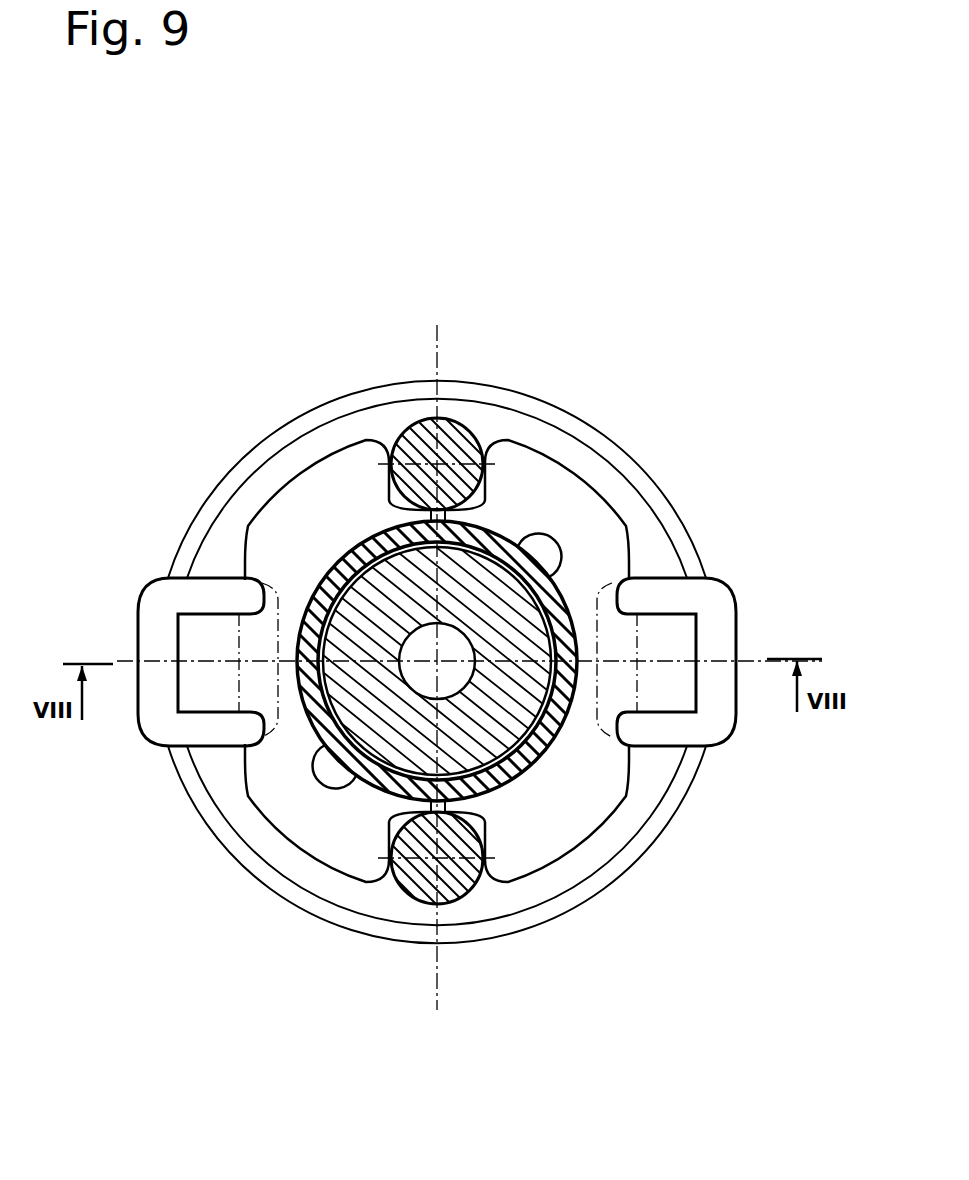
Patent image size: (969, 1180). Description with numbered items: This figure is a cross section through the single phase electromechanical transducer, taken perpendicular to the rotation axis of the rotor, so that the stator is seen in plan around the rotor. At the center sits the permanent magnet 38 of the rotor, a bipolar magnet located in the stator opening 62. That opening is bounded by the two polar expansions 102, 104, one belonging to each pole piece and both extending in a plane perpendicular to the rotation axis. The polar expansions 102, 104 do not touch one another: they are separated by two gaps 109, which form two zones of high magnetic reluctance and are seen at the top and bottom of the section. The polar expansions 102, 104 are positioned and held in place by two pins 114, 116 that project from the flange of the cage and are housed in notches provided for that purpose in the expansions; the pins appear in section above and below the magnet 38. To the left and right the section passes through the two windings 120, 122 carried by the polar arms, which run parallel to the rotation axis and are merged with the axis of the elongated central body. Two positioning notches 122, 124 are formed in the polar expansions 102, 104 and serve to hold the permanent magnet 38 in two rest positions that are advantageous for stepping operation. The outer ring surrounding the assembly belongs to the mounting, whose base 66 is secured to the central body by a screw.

The permanent magnet 38 is at (495, 730).
The stator opening 62 is at (381, 534).
The base 66 is at (596, 440).
The polar expansion 102 is at (325, 528).
The polar expansion 104 is at (577, 785).
The gaps 109 is at (450, 514).
The pin 114 is at (423, 885).
The pin 116 is at (463, 443).
The winding 120 is at (165, 728).
The winding 122 is at (723, 618).
The positioning notch 124 is at (560, 557).